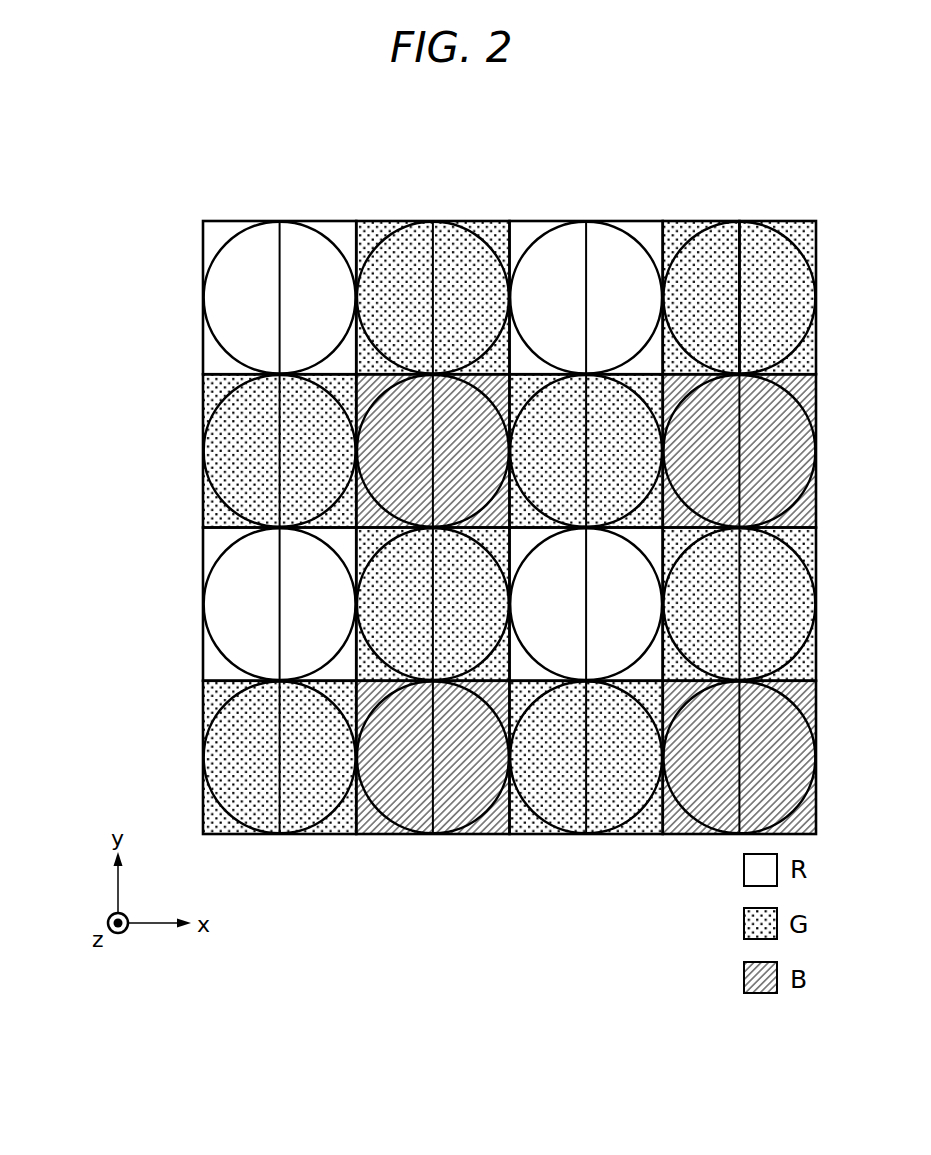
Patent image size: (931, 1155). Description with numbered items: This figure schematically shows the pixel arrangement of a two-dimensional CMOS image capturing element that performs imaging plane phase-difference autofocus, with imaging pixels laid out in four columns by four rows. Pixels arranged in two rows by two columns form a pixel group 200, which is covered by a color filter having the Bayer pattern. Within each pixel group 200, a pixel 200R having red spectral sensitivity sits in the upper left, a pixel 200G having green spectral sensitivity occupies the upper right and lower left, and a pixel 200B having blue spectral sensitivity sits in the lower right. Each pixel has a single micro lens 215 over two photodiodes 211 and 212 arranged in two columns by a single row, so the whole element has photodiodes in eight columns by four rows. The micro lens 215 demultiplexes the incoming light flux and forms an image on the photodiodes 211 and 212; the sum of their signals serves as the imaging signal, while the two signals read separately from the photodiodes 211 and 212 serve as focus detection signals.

The pixel group 200 is at (103, 283).
The pixel having red spectral sensitivity 200R is at (225, 298).
The pixel having green spectral sensitivity 200G is at (237, 409).
The pixel having blue spectral sensitivity 200B is at (380, 462).
The micro lens 215 is at (233, 232).
The photodiode 211 is at (708, 248).
The photodiode 212 is at (760, 248).